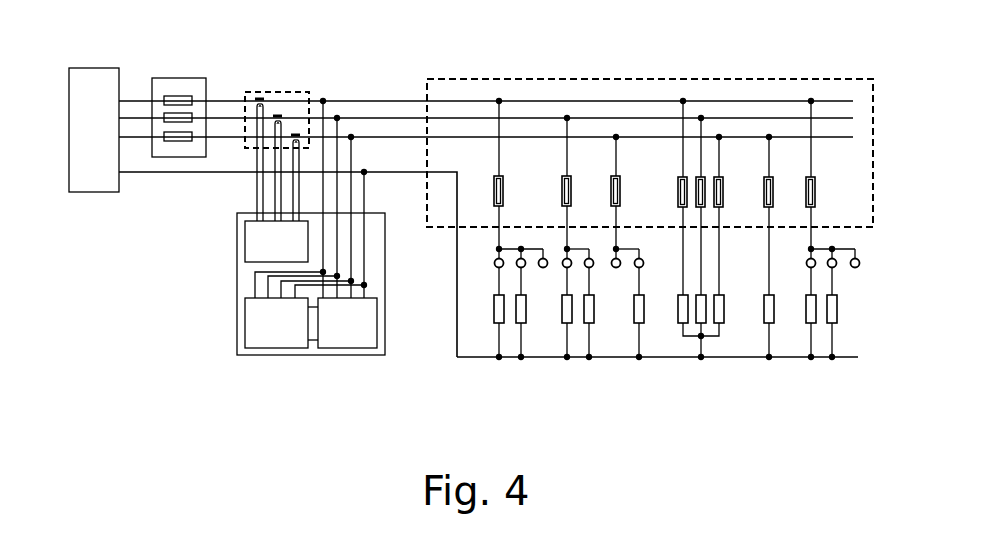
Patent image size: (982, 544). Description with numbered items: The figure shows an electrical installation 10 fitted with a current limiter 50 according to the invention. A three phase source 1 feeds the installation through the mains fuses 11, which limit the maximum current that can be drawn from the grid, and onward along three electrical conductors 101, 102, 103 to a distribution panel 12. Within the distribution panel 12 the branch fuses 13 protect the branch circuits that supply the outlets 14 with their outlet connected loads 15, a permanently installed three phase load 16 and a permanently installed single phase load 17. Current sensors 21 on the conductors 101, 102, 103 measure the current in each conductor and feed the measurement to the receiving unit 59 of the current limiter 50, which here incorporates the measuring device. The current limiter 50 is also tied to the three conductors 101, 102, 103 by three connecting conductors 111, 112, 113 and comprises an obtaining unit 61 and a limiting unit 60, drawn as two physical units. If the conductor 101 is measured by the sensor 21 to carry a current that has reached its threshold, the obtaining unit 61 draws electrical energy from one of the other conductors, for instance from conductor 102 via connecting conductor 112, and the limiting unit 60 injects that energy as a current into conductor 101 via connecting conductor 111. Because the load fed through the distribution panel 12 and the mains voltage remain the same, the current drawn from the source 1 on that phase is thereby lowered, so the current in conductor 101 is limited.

The three phase source 1 is at (102, 68).
The electrical installation 10 is at (158, 420).
The mains fuses 11 is at (172, 78).
The distribution panel 12 is at (467, 79).
The branch fuses 13 is at (505, 182).
The outlets 14 is at (495, 262).
The outlet connected loads 15 is at (493, 308).
The permanently installed three phase load 16 is at (724, 300).
The permanently installed single phase load 17 is at (772, 325).
The current sensors 21 is at (245, 148).
The current limiter 50 is at (288, 284).
The receiving unit 59 is at (276, 241).
The limiting unit 60 is at (347, 323).
The obtaining unit 61 is at (276, 323).
The electrical conductor 101 is at (213, 101).
The electrical conductor 102 is at (222, 118).
The electrical conductor 103 is at (232, 137).
The connecting conductor 111 is at (323, 101).
The connecting conductor 112 is at (337, 118).
The connecting conductor 113 is at (351, 137).